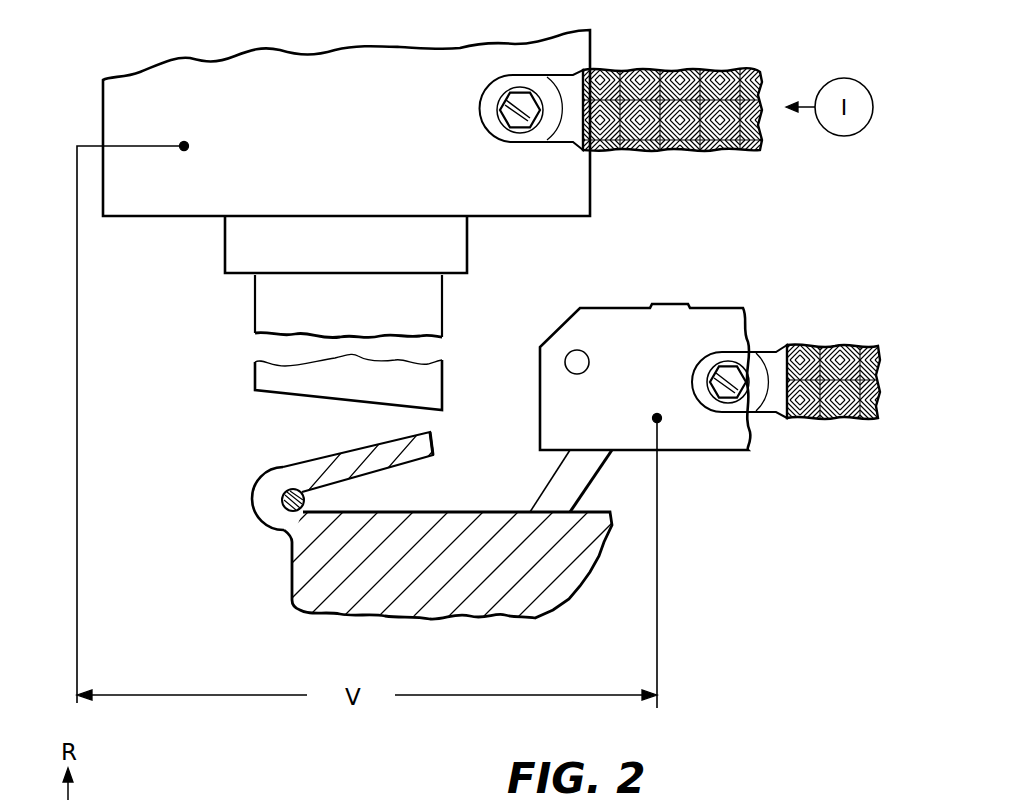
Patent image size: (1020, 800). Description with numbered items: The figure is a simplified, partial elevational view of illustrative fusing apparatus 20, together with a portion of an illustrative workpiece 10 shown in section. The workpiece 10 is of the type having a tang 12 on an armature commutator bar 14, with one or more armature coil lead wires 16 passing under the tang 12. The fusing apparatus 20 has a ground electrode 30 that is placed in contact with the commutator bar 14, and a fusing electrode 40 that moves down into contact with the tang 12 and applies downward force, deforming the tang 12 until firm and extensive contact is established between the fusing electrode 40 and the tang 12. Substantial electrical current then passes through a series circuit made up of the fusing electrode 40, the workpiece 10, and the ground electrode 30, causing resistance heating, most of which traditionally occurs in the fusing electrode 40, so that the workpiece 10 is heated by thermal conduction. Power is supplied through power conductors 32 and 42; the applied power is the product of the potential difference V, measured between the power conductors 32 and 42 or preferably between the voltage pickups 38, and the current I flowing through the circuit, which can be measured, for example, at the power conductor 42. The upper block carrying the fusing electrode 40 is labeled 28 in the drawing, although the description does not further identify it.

The workpiece 10 is at (266, 598).
The tang 12 is at (436, 447).
The armature commutator bar 14 is at (469, 522).
The armature coil lead wire 16 is at (265, 516).
The fusing apparatus 20 is at (736, 249).
The housing block 28 is at (346, 111).
The ground electrode 30 is at (596, 478).
The power conductor 32 is at (833, 350).
The voltage pickups 38 is at (77, 632).
The fusing electrode 40 is at (238, 292).
The power conductor 42 is at (622, 78).